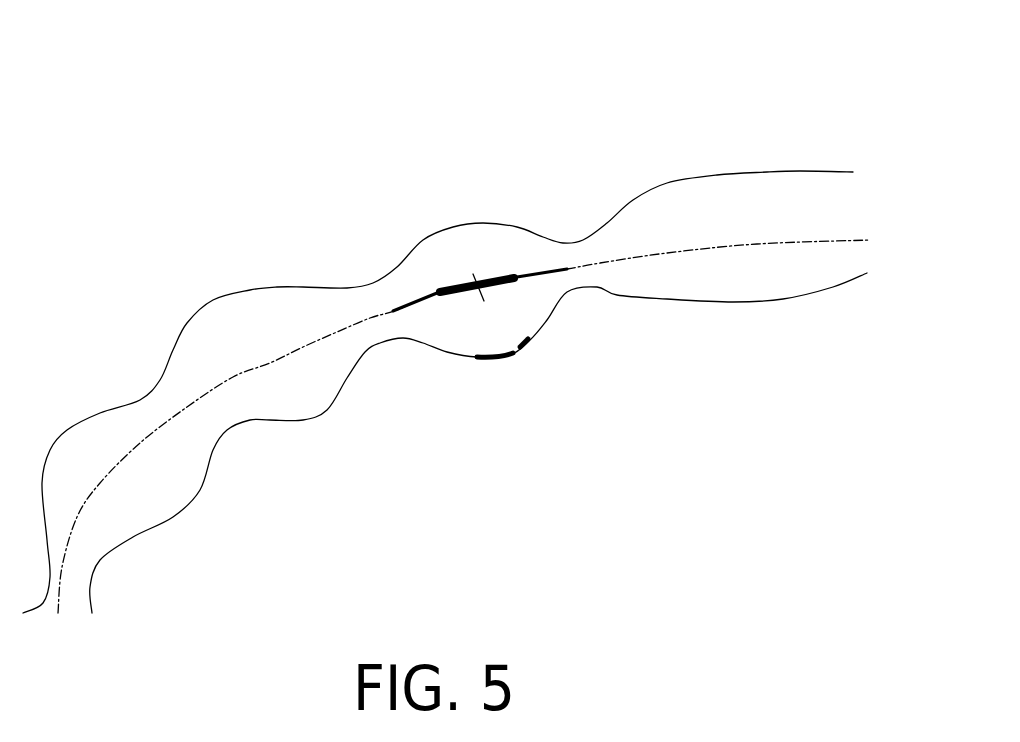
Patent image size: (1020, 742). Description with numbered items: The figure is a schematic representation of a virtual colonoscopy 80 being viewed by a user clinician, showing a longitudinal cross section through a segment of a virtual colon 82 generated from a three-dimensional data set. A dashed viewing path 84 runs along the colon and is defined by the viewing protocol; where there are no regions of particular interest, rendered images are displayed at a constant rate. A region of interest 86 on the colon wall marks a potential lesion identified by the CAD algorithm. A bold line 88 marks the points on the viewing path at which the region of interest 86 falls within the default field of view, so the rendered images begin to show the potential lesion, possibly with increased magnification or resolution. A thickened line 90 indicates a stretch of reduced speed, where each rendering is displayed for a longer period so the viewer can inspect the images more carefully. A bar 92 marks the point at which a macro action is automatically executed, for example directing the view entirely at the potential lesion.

The virtual colonoscopy 80 is at (608, 94).
The virtual colon 82 is at (270, 289).
The viewing path 84 is at (760, 243).
The region of interest 86 is at (515, 356).
The bold line 88 is at (418, 300).
The thickened line 90 is at (498, 273).
The bar 92 is at (466, 308).